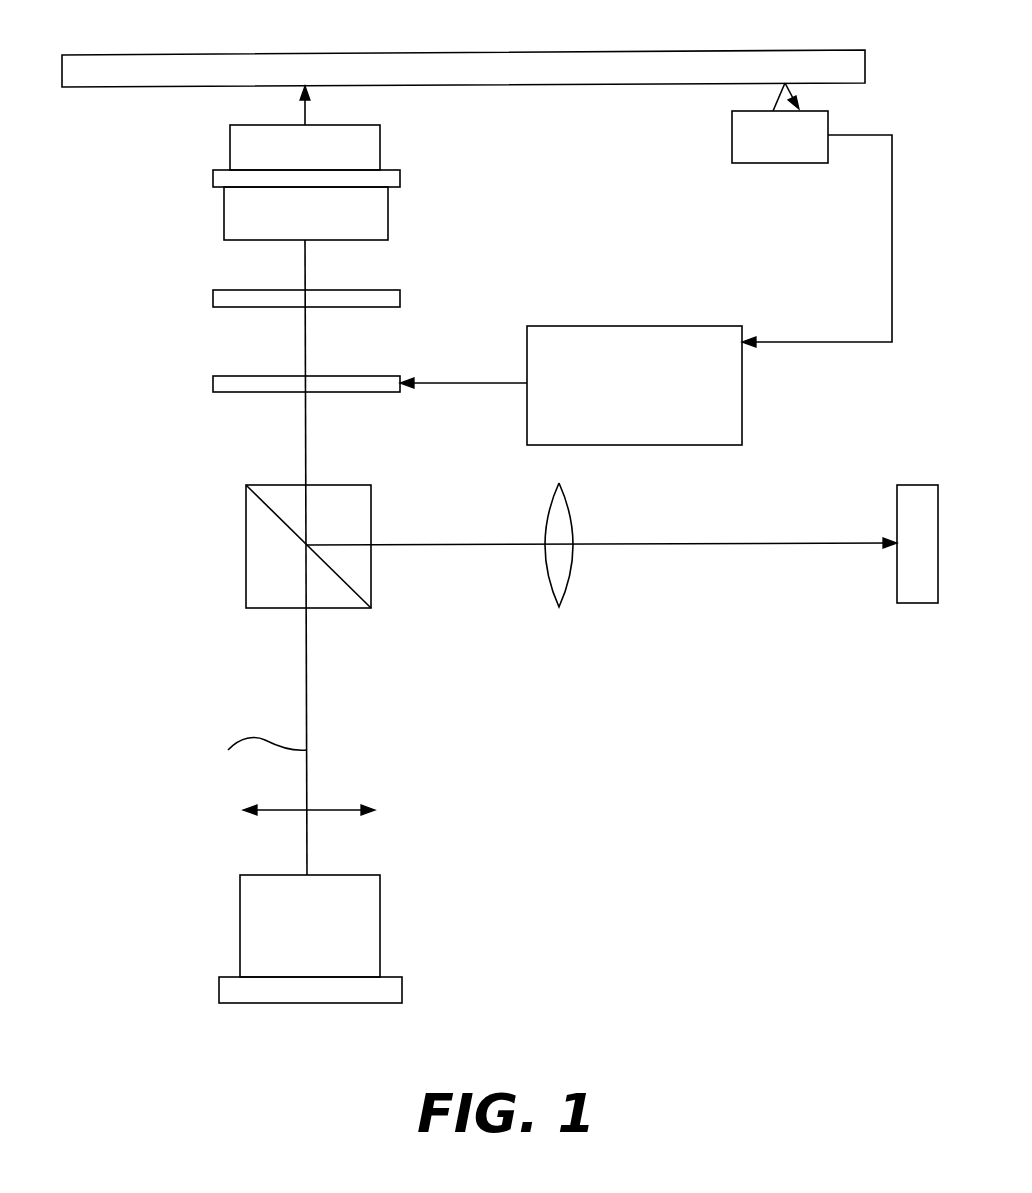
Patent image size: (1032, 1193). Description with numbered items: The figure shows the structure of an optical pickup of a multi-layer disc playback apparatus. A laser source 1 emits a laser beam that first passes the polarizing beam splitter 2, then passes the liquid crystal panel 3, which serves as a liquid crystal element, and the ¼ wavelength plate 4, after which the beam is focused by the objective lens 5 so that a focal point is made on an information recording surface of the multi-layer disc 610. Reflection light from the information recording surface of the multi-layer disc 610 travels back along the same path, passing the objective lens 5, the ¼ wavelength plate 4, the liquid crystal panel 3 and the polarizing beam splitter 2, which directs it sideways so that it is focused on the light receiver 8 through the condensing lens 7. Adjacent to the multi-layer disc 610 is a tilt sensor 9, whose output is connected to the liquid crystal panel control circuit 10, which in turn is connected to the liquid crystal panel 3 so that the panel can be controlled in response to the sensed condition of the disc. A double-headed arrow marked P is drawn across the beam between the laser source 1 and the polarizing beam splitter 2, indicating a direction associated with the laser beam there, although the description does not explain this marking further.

The laser source 1 is at (365, 892).
The polarizing beam splitter 2 is at (274, 603).
The liquid crystal panel 3 is at (212, 385).
The ¼ wavelength plate 4 is at (220, 298).
The objective lens 5 is at (370, 207).
The condensing lens 7 is at (573, 572).
The light receiver 8 is at (896, 519).
The tilt sensor 9 is at (747, 141).
The liquid crystal panel control circuit 10 is at (712, 326).
The multi-layer disc 610 is at (547, 53).
The polarization direction P is at (340, 810).